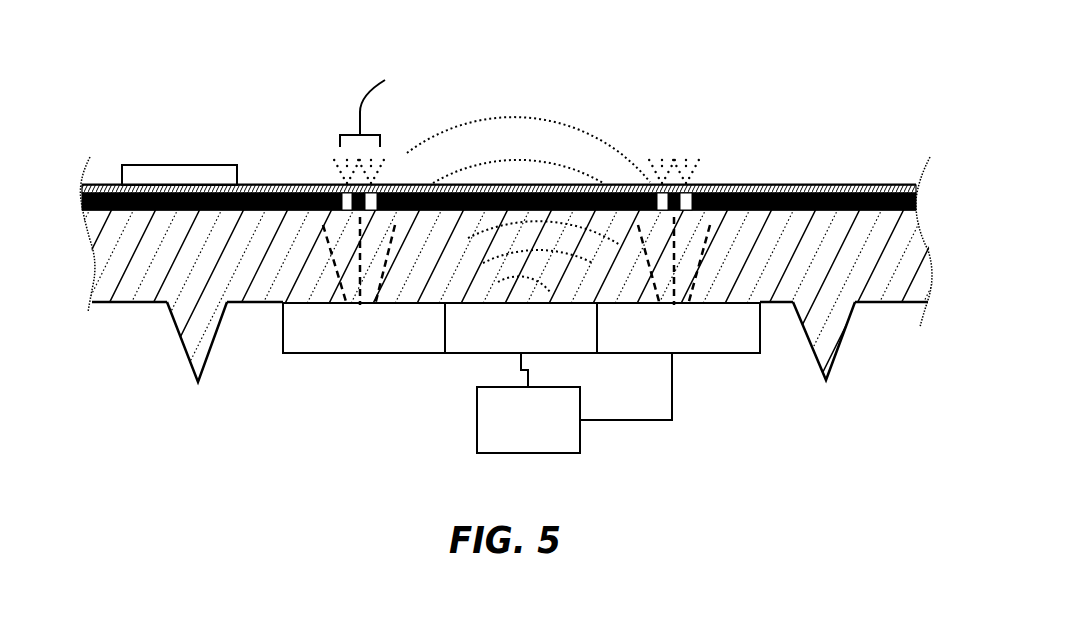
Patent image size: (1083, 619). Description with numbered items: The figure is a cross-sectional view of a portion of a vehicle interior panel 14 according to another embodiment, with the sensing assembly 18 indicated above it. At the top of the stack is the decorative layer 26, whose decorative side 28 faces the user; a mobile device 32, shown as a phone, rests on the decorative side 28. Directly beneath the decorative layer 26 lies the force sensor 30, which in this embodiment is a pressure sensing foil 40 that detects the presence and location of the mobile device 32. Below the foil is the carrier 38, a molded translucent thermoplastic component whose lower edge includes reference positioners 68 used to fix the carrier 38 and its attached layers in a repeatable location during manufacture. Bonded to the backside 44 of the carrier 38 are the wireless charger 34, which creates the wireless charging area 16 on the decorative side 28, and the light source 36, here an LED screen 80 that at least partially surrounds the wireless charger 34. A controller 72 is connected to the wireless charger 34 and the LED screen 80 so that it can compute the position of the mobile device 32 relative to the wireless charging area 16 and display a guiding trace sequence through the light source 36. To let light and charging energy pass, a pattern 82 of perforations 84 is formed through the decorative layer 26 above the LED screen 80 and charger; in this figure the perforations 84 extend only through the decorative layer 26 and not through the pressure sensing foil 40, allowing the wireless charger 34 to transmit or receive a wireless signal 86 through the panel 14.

The vehicle interior panel 14 is at (699, 44).
The wireless charging area 16 is at (642, 130).
The sensing assembly 18 is at (749, 76).
The decorative layer 26 is at (83, 190).
The decorative side 28 is at (718, 185).
The force sensor 30 is at (82, 203).
The mobile device 32 is at (168, 172).
The wireless charger 34 is at (507, 345).
The light source 36 is at (313, 355).
The carrier 38 is at (102, 266).
The pressure sensing foil 40 is at (80, 208).
The backside 44 is at (267, 305).
The reference positioners 68 is at (193, 364).
The controller 72 is at (516, 430).
The LED screen 80 is at (350, 345).
The pattern 82 is at (376, 106).
The perforations 84 is at (372, 196).
The wireless signal 86 is at (577, 125).